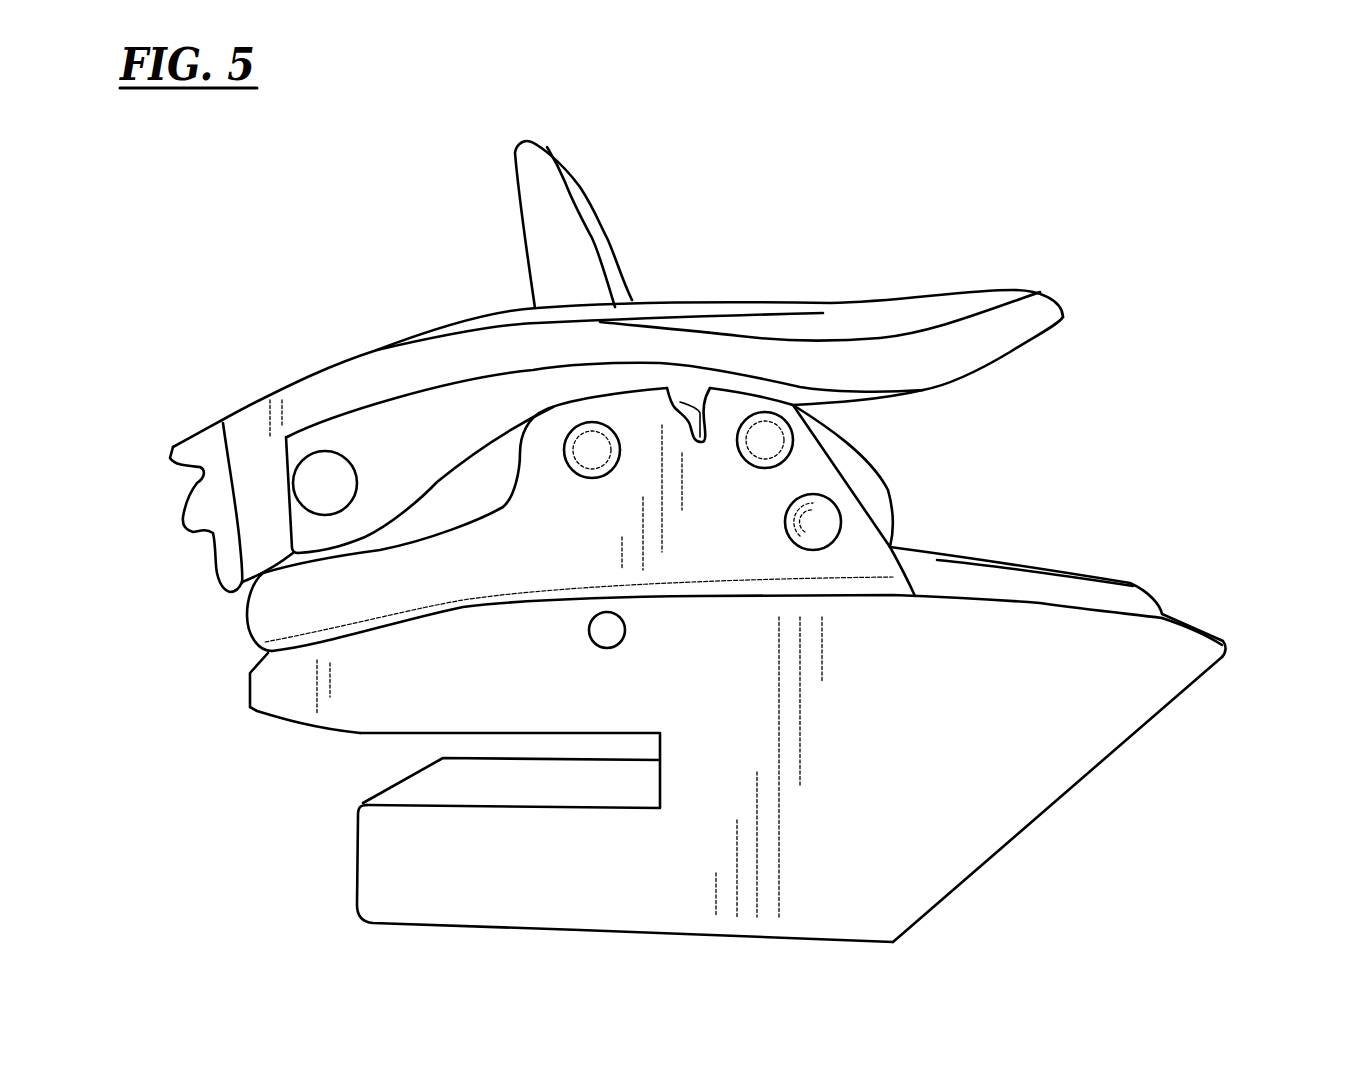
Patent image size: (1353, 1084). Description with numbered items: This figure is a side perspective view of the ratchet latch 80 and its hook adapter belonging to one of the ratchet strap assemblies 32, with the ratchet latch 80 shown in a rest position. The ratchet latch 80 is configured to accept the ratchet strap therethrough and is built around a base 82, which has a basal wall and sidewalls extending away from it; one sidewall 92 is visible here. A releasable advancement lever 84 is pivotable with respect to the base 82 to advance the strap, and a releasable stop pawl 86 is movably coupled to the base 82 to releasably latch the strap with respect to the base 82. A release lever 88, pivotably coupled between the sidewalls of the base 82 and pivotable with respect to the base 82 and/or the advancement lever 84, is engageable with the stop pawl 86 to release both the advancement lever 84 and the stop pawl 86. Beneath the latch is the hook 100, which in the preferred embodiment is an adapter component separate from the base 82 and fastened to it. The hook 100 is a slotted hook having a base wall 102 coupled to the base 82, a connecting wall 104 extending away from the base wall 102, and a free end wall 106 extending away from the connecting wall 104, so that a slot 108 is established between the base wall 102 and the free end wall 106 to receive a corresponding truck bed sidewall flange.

The ratchet strap assembly 32 is at (753, 162).
The ratchet latch 80 is at (866, 189).
The base 82 is at (248, 628).
The releasable advancement lever 84 is at (1010, 293).
The releasable stop pawl 86 is at (890, 493).
The release lever 88 is at (515, 190).
The sidewall 92 is at (571, 567).
The hook 100 is at (1204, 597).
The base wall 102 is at (265, 712).
The connecting wall 104 is at (730, 785).
The free end wall 106 is at (357, 867).
The slot 108 is at (354, 762).